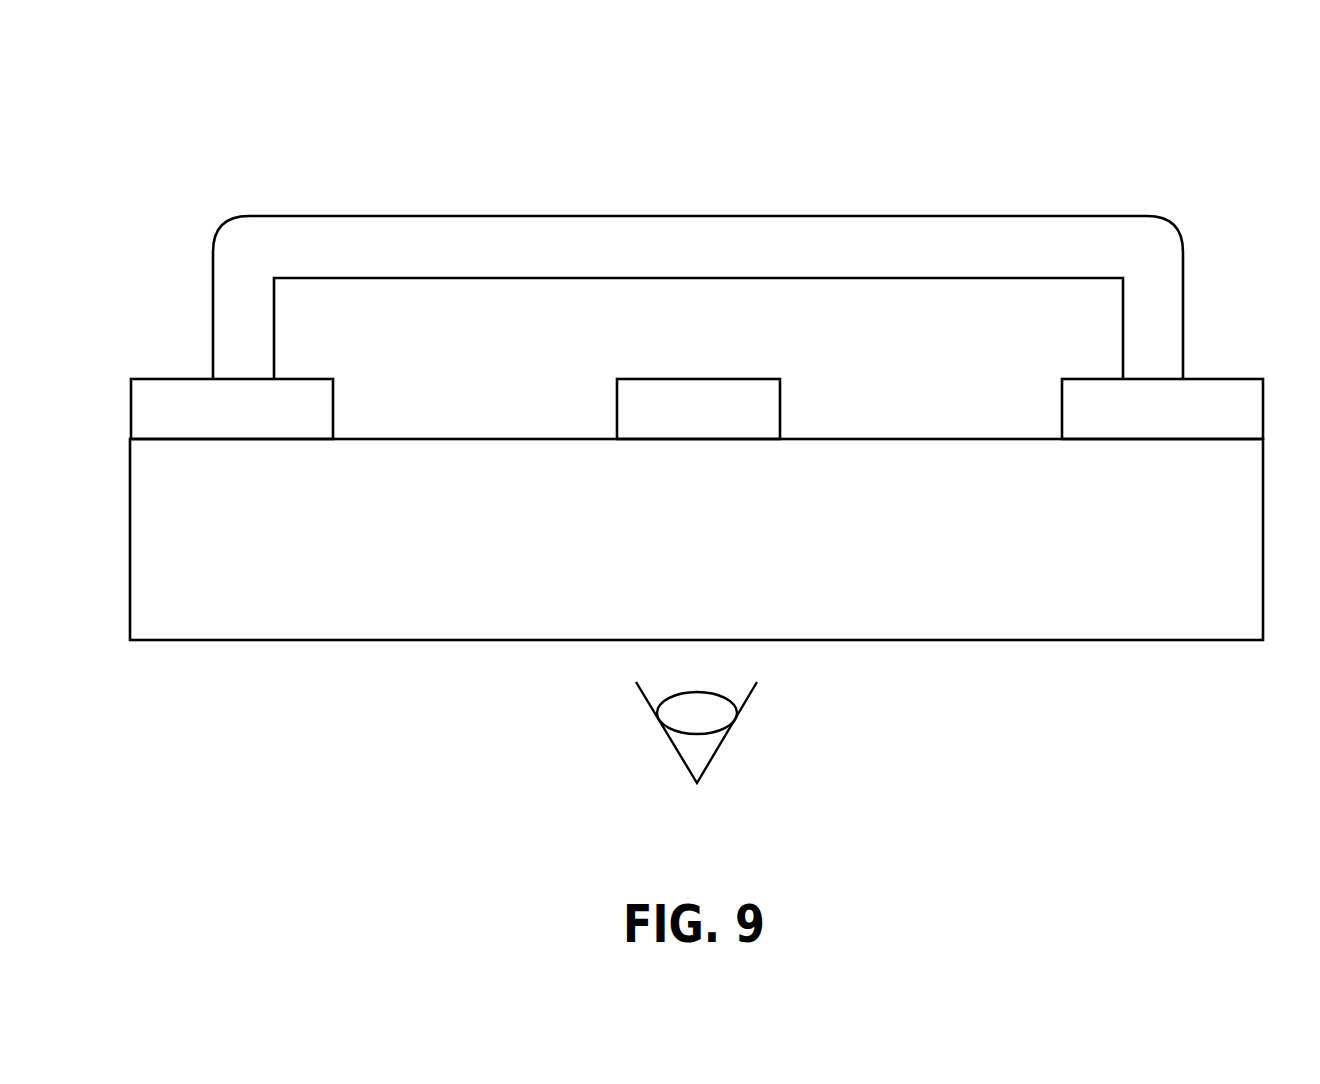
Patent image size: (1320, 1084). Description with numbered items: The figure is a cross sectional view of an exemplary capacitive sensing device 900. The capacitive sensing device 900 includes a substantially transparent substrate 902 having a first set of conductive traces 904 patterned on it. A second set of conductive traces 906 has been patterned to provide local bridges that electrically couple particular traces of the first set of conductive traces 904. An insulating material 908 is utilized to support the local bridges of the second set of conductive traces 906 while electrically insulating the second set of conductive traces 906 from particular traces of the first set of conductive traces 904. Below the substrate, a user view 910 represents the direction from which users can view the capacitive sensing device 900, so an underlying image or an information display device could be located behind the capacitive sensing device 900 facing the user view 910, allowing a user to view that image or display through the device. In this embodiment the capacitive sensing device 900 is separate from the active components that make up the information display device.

The capacitive sensing device 900 is at (725, 78).
The substantially transparent substrate 902 is at (720, 568).
The first set of conductive traces 904 is at (257, 422).
The second set of conductive traces 906 is at (720, 261).
The insulating material 908 is at (498, 385).
The user view 910 is at (738, 712).